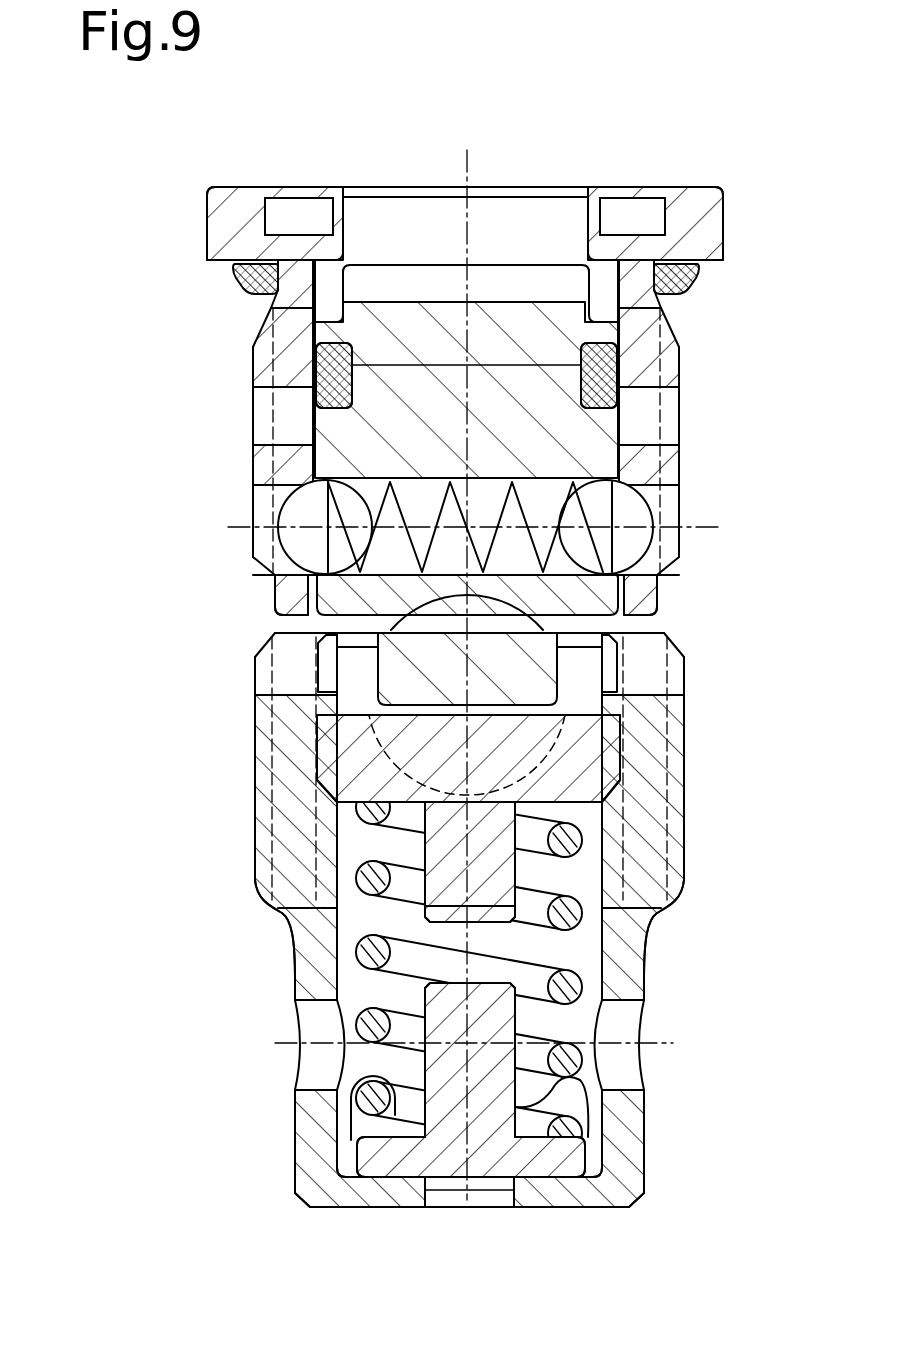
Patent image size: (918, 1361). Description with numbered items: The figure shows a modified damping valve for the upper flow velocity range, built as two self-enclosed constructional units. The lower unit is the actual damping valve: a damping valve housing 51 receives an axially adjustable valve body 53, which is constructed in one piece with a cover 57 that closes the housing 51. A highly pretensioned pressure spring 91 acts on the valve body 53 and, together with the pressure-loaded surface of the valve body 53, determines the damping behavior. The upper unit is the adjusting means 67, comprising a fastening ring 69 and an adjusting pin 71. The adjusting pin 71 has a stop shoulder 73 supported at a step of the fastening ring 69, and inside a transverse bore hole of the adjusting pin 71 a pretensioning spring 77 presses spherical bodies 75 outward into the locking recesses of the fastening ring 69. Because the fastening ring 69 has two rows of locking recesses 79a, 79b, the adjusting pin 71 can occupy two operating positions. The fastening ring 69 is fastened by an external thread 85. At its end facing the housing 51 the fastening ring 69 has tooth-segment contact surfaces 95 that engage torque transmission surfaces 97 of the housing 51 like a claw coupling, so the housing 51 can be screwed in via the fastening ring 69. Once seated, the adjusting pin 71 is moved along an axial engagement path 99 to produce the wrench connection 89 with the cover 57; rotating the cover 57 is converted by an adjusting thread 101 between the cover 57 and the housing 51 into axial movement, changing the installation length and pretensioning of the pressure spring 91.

The damping valve housing 51 is at (295, 956).
The valve body 53 is at (567, 1163).
The cover 57 is at (587, 765).
The adjusting means 67 is at (210, 538).
The fastening ring 69 is at (282, 372).
The adjusting pin 71 is at (597, 442).
The stop shoulder 73 is at (336, 306).
The spherical bodies 75 is at (637, 538).
The pretensioning spring 77 is at (527, 497).
The locking recesses 79a is at (268, 428).
The locking recesses 79b is at (272, 497).
The external thread 85 is at (260, 348).
The wrench connection 89 is at (365, 741).
The pressure spring 91 is at (590, 980).
The contact surfaces 95 is at (290, 597).
The torque transmission surfaces 97 is at (287, 669).
The axial engagement path 99 is at (260, 323).
The adjusting thread 101 is at (305, 776).